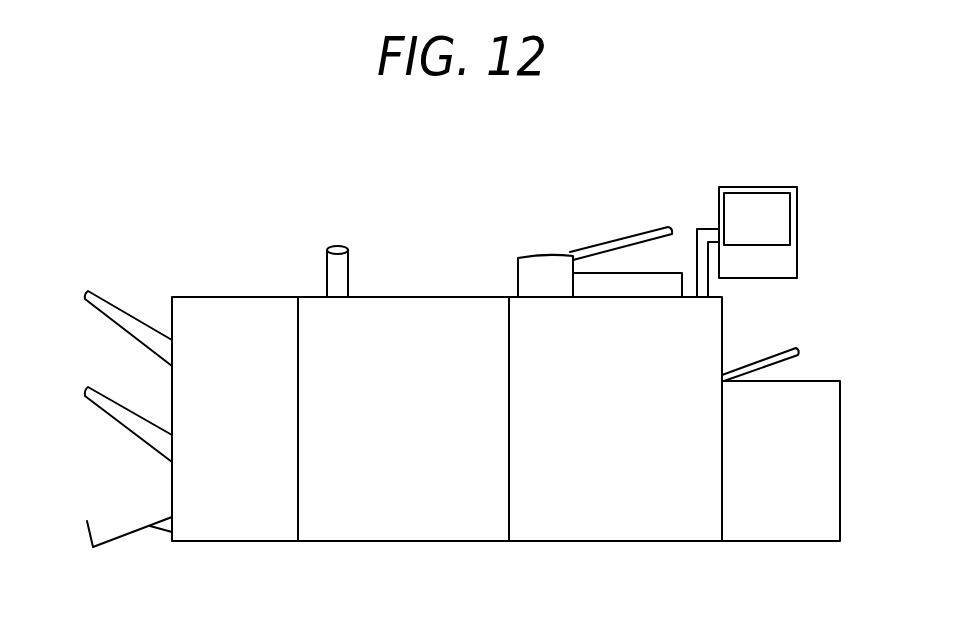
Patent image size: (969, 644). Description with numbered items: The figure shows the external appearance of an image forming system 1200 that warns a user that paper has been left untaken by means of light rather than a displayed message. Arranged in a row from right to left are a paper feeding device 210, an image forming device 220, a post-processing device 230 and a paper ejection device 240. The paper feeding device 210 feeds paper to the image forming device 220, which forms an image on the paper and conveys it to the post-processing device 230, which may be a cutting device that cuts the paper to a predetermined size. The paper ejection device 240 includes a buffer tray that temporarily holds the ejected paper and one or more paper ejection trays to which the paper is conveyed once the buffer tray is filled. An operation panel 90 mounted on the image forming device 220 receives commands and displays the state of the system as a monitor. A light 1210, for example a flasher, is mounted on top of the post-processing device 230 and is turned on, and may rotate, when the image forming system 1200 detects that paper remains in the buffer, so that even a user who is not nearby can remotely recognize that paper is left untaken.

The image forming system 1200 is at (248, 172).
The light 1210 is at (348, 267).
The operation panel 90 is at (771, 210).
The paper feeding device 210 is at (856, 338).
The image forming device 220 is at (612, 515).
The post-processing device 230 is at (420, 518).
The paper ejection device 240 is at (64, 277).